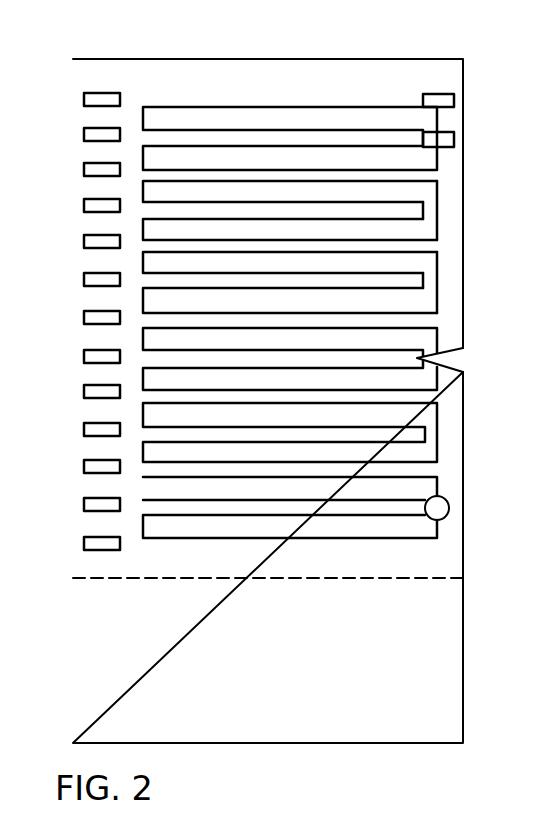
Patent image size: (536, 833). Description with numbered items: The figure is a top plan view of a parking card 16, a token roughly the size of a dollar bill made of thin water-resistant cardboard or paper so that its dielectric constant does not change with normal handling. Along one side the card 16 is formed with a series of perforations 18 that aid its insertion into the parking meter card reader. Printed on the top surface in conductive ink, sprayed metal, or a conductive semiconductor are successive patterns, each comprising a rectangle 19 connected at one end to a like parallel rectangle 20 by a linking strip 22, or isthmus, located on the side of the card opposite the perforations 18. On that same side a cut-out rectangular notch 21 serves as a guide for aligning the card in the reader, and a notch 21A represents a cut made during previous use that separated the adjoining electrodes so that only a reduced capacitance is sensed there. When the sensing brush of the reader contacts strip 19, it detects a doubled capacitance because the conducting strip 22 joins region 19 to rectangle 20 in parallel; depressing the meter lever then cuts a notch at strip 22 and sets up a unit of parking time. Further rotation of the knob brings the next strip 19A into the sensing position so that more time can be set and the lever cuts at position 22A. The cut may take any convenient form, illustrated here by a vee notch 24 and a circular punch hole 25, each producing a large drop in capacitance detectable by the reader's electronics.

The parking card 16 is at (278, 72).
The perforations 18 is at (100, 99).
The rectangle electrode 19 is at (415, 195).
The next strip 19A is at (425, 265).
The parallel rectangle 20 is at (415, 232).
The cut-out rectangular notch 21 is at (444, 101).
The notch 21A is at (447, 140).
The linking strip 22 is at (418, 210).
The cut position 22A is at (420, 283).
The vee notch 24 is at (448, 364).
The circular punch hole 25 is at (449, 506).